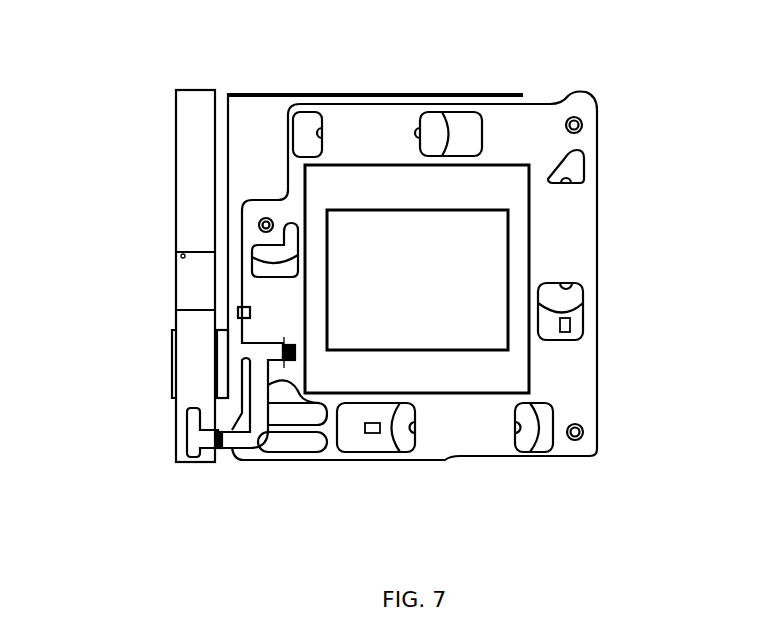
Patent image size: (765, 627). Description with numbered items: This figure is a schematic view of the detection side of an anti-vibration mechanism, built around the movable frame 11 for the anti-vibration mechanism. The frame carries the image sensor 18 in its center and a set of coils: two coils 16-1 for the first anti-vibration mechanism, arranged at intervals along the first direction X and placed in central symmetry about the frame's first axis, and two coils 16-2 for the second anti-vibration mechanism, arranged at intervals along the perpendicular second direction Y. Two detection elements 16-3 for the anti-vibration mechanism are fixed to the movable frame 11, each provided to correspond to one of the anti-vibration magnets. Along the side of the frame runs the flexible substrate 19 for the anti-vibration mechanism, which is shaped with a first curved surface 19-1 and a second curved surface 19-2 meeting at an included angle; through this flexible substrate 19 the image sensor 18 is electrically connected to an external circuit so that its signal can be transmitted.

The movable frame for the anti-vibration mechanism 11 is at (563, 215).
The image sensor 18 is at (470, 320).
The coils for the first anti-vibration mechanism 16-1 is at (568, 287).
The coils for the second anti-vibration mechanism 16-2 is at (428, 122).
The detection elements for the anti-vibration mechanism 16-3 is at (570, 325).
The flexible substrate for the anti-vibration mechanism 19 is at (202, 117).
The first curved surface 19-1 is at (312, 93).
The second curved surface 19-2 is at (226, 100).